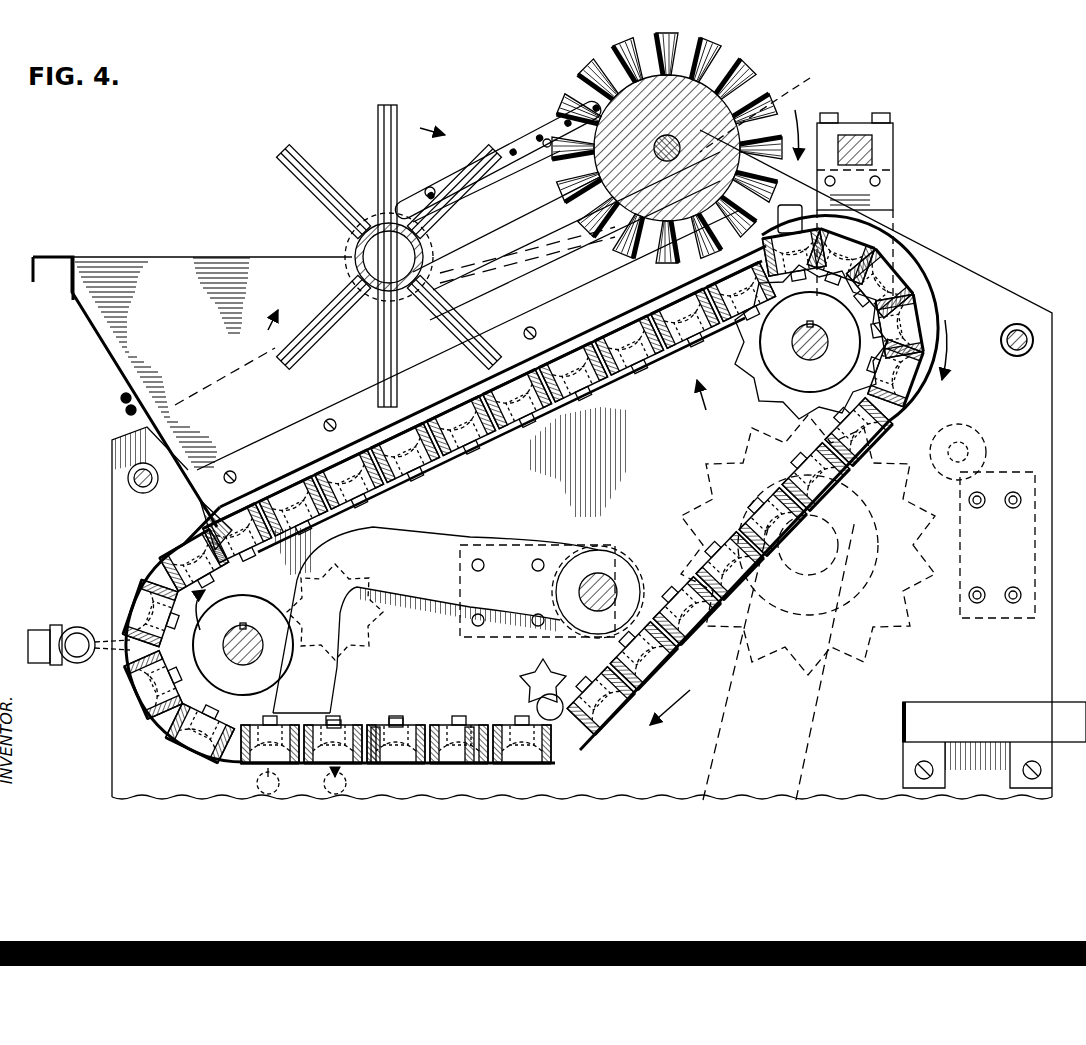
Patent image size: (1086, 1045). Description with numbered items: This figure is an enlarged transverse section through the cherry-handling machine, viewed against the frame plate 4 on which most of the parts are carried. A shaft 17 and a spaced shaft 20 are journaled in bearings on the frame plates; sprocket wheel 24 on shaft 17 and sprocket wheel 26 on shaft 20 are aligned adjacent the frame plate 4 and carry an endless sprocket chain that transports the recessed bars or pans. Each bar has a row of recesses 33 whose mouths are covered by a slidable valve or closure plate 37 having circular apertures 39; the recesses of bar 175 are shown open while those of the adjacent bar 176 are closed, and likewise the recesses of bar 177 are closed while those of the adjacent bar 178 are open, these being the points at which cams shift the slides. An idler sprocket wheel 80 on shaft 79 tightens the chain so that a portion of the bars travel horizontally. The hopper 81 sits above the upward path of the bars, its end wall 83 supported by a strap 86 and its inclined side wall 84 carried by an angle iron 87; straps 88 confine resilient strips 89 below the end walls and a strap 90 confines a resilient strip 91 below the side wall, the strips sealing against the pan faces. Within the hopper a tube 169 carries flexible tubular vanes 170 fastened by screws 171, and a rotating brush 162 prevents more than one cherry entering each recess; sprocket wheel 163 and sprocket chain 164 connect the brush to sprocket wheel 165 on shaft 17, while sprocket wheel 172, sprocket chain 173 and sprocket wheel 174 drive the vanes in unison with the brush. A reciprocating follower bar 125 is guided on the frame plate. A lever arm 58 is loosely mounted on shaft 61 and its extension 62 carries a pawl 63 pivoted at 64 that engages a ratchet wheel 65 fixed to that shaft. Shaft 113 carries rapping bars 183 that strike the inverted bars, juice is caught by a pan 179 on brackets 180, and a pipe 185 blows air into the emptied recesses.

The frame plate 4 is at (962, 286).
The shaft 17 is at (745, 425).
The shaft 20 is at (157, 635).
The sprocket wheel 24 is at (745, 400).
The sprocket wheel 26 is at (195, 598).
The recesses 33 is at (905, 265).
The slidable valve or closure plate 37 is at (893, 257).
The circular apertures 39 is at (328, 755).
The lever arm 58 is at (808, 722).
The shaft 61 is at (948, 549).
The extension 62 is at (963, 522).
The pawl 63 is at (920, 437).
The pivot 64 is at (960, 450).
The ratchet wheel 65 is at (745, 450).
The shaft 79 is at (540, 705).
The idler sprocket wheel 80 is at (541, 680).
The hopper 81 is at (200, 252).
The end wall 83 is at (127, 360).
The inclined side wall 84 is at (170, 343).
The strap 86 is at (530, 196).
The angle iron 87 is at (130, 422).
The straps 88 is at (267, 465).
The resilient strips 89 is at (303, 470).
The strap 90 is at (197, 482).
The resilient strip 91 is at (217, 512).
The shaft 113 is at (612, 585).
The follower bar 125 is at (857, 138).
The rotating brush 162 is at (748, 76).
The sprocket wheel 163 is at (773, 105).
The sprocket chain 164 is at (800, 228).
The sprocket wheel 165 is at (730, 350).
The tube 169 is at (355, 250).
The tubular vanes 170 is at (392, 108).
The screws 171 is at (437, 227).
The sprocket wheel 172 is at (434, 196).
The sprocket chain 173 is at (500, 142).
The sprocket wheel 174 is at (547, 138).
The bar 175 is at (795, 340).
The bar 176 is at (812, 325).
The bar 177 is at (410, 758).
The bar 178 is at (390, 750).
The pan 179 is at (925, 712).
The brackets 180 is at (905, 753).
The rapping bars 183 is at (433, 550).
The pipe 185 is at (77, 665).